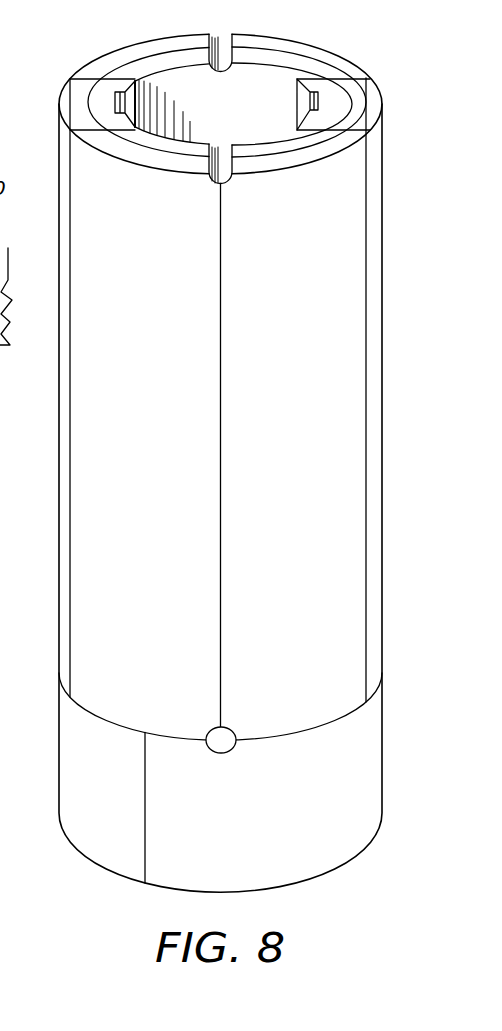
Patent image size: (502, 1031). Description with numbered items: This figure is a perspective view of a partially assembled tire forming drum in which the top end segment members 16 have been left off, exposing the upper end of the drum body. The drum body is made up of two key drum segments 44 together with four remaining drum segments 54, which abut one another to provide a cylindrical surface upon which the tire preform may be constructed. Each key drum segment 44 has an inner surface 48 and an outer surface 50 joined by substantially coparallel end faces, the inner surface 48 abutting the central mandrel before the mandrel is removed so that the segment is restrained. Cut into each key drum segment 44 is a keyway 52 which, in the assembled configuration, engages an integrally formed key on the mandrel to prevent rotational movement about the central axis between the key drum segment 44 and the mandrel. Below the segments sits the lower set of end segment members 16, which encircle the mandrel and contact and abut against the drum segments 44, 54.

The arcuate end section member 16 is at (372, 711).
The key drum segment 44 is at (375, 198).
The inner surface 48 is at (303, 63).
The outer surface 50 is at (300, 47).
The keyway 52 is at (115, 101).
The drum segment 54 is at (355, 252).